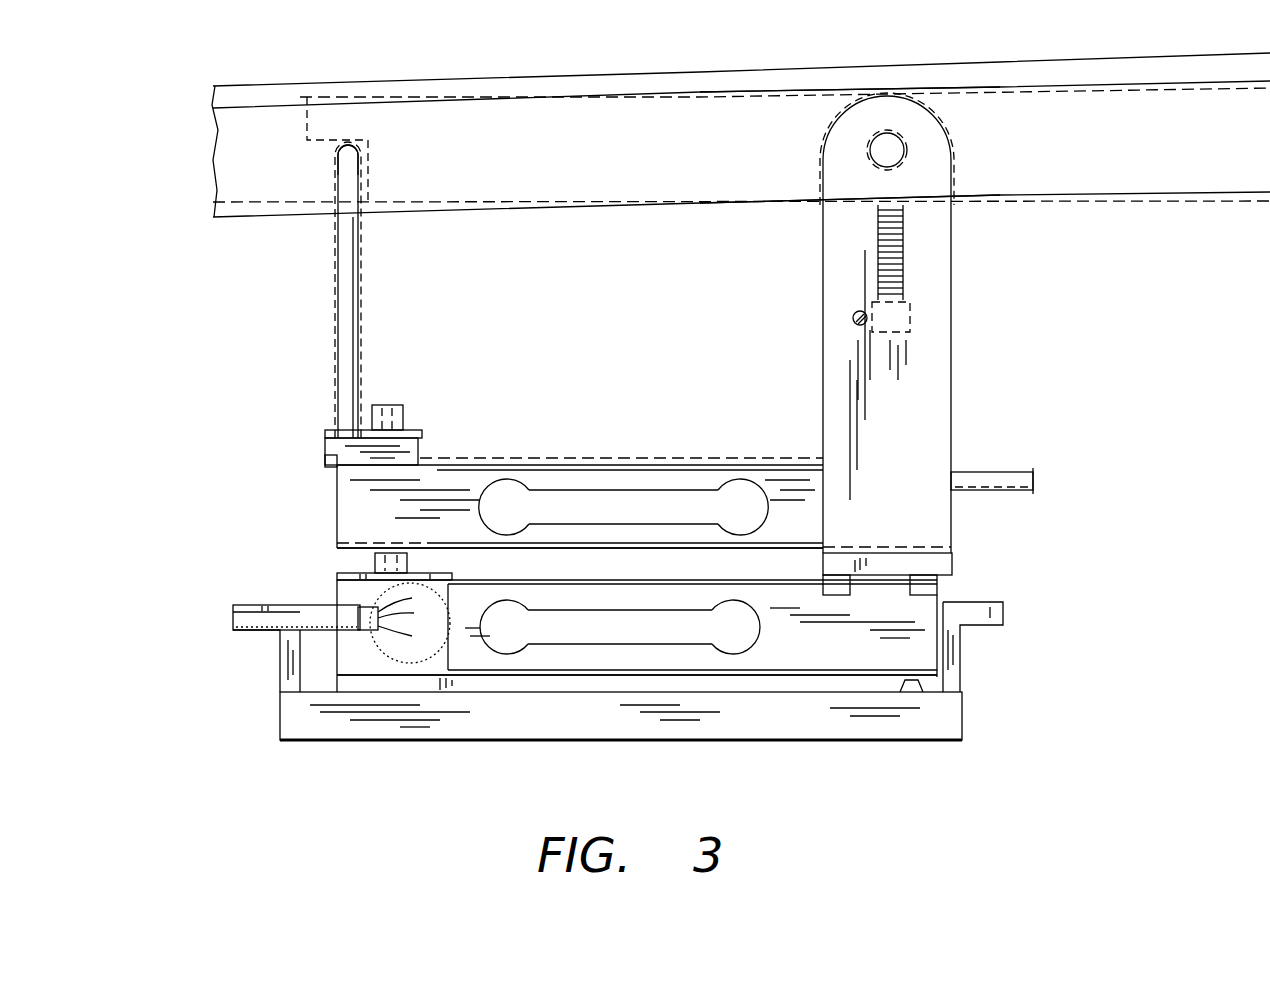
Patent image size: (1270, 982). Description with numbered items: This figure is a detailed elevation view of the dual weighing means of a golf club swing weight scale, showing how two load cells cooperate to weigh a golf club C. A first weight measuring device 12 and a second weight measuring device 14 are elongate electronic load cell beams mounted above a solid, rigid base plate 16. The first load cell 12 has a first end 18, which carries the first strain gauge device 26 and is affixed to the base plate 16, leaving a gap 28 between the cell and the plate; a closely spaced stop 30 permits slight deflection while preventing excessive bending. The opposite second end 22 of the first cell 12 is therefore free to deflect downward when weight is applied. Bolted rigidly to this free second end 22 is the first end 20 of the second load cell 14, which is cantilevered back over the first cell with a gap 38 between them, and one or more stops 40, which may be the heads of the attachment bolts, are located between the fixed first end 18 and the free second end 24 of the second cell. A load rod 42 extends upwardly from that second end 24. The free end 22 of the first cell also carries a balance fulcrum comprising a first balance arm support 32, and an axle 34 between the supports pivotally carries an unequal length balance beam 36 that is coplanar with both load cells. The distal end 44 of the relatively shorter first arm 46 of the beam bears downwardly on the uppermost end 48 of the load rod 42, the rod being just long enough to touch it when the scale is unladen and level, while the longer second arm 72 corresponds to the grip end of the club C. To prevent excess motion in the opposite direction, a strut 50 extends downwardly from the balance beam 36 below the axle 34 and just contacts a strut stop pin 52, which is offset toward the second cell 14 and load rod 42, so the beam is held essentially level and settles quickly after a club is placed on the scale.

The golf club C is at (992, 62).
The first weight measuring device 12 is at (695, 677).
The second weight measuring device 14 is at (636, 462).
The base plate 16 is at (580, 742).
The first end of first load cell 18 is at (337, 592).
The first end of second load cell 20 is at (953, 522).
The second end of first load cell 22 is at (940, 650).
The second end of second load cell 24 is at (337, 488).
The first strain gauge device 26 is at (368, 641).
The gap 28 is at (832, 682).
The stop 30 is at (905, 692).
The first balance arm support 32 is at (922, 436).
The axle 34 is at (905, 152).
The balance beam 36 is at (722, 208).
The gap 38 is at (548, 579).
The stop 40 is at (375, 565).
The load rod 42 is at (333, 304).
The distal end of first arm 44 is at (305, 150).
The first arm 46 is at (582, 92).
The uppermost end of load rod 48 is at (372, 158).
The strut 50 is at (905, 265).
The strut stop pin 52 is at (853, 318).
The second arm 72 is at (790, 95).